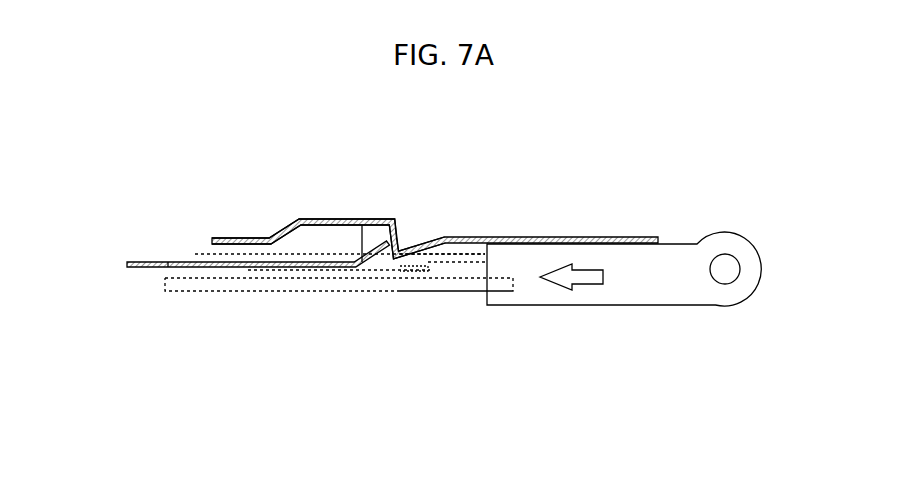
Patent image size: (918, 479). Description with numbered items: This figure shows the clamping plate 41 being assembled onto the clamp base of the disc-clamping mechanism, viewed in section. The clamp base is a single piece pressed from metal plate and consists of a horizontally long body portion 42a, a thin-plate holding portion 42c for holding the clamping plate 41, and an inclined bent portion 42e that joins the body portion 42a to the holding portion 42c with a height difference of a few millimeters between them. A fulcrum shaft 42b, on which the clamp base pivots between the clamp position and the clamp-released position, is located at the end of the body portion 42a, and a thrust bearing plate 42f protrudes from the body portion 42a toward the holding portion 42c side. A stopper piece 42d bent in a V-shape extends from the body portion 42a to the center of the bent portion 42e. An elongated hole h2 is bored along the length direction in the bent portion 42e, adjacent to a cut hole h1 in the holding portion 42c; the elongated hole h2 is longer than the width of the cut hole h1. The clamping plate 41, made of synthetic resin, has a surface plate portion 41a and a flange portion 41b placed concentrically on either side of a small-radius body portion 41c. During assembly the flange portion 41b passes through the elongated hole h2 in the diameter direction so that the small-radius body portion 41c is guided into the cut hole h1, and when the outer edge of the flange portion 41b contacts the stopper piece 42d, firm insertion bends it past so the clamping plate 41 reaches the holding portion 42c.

The clamping plate 41 is at (296, 308).
The surface plate portion 41a is at (470, 291).
The flange portion 41b is at (473, 252).
The small-radius body portion 41c is at (400, 272).
The body portion 42a is at (533, 237).
The fulcrum shaft 42b is at (726, 266).
The holding portion 42c is at (135, 260).
The stopper piece 42d is at (395, 218).
The bent portion 42e is at (378, 219).
The thrust bearing plate 42f is at (240, 238).
The cut hole h1 is at (170, 262).
The elongated hole h2 is at (362, 240).